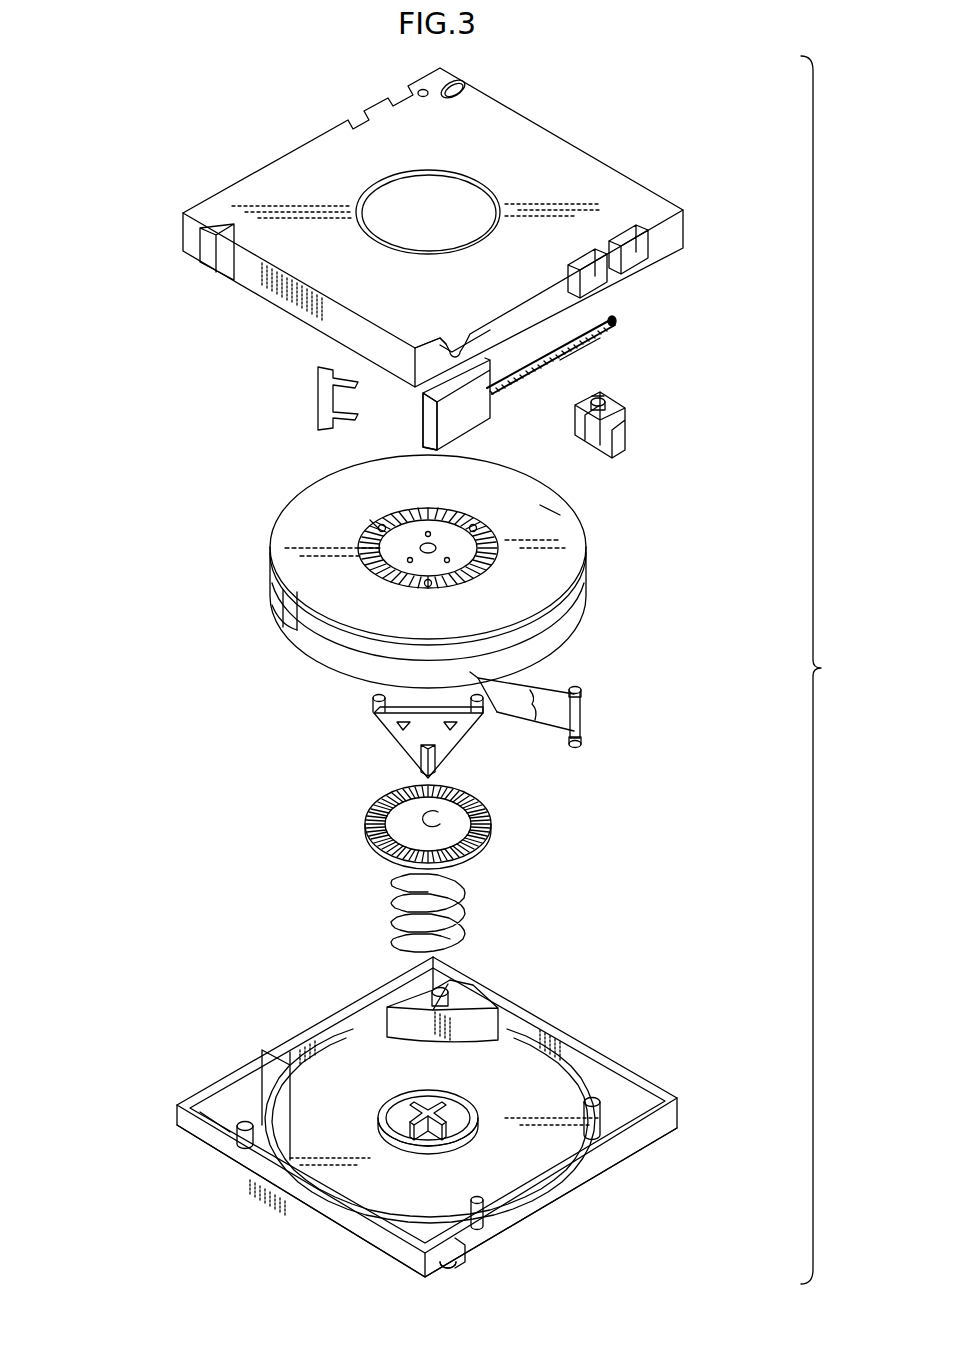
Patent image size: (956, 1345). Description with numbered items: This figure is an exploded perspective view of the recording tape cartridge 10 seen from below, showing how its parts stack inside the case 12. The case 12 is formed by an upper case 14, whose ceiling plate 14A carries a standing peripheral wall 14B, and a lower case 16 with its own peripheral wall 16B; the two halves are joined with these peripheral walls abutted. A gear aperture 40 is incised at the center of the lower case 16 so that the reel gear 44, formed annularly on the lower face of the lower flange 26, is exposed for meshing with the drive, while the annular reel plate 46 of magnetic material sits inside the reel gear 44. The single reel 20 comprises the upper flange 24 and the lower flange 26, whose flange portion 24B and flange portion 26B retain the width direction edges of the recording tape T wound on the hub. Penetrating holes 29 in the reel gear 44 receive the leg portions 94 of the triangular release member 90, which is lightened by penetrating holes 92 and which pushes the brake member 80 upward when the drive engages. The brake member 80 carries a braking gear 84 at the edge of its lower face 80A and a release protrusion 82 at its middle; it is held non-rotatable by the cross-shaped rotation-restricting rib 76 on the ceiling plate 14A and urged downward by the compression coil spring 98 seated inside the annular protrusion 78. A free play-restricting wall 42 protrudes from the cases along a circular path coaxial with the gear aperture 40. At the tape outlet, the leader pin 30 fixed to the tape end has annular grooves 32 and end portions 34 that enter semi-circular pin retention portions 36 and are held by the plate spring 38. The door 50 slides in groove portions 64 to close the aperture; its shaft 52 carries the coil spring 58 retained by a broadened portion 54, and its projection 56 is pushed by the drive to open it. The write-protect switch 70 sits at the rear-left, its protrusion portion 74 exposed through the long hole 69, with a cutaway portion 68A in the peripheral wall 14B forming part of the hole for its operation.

The recording tape cartridge 10 is at (654, 148).
The case 12 is at (417, 672).
The upper case 14 is at (688, 1118).
The ceiling plate 14A is at (538, 1070).
The peripheral wall 14B is at (250, 1165).
The lower case 16 is at (690, 222).
The peripheral wall 16B is at (180, 238).
The reel 20 is at (590, 518).
The upper flange 24 is at (590, 614).
The flange portion 24B is at (290, 622).
The lower flange 26 is at (268, 548).
The flange portion 26B is at (548, 512).
The penetrating holes 29 is at (376, 526).
The leader pin 30 is at (592, 716).
The annular grooves 32 is at (583, 700).
The end portions 34 is at (575, 690).
The pin retention portions 36 is at (458, 346).
The plate spring 38 is at (322, 396).
The gear aperture 40 is at (466, 178).
The free play-restricting wall 42 is at (407, 1020).
The reel gear 44 is at (498, 526).
The reel plate 46 is at (362, 542).
The door 50 is at (420, 410).
The shaft 52 is at (554, 362).
The broadened portion 54 is at (618, 320).
The projection 56 is at (420, 431).
The coil spring 58 is at (598, 340).
The groove portions 64 is at (458, 1258).
The cutaway portion 68A is at (453, 975).
The long hole 69 is at (466, 88).
The write-protect switch 70 is at (632, 438).
The protrusion portion 74 is at (604, 404).
The rotation-restricting rib 76 is at (440, 1098).
The annular protrusion 78 is at (410, 1150).
The brake member 80 is at (490, 843).
The lower face 80A is at (470, 821).
The release protrusion 82 is at (440, 812).
The braking gear 84 is at (376, 811).
The release member 90 is at (398, 752).
The penetrating holes 92 is at (400, 723).
The leg portions 94 is at (374, 707).
The compression coil spring 98 is at (470, 892).
The recording tape T is at (548, 716).